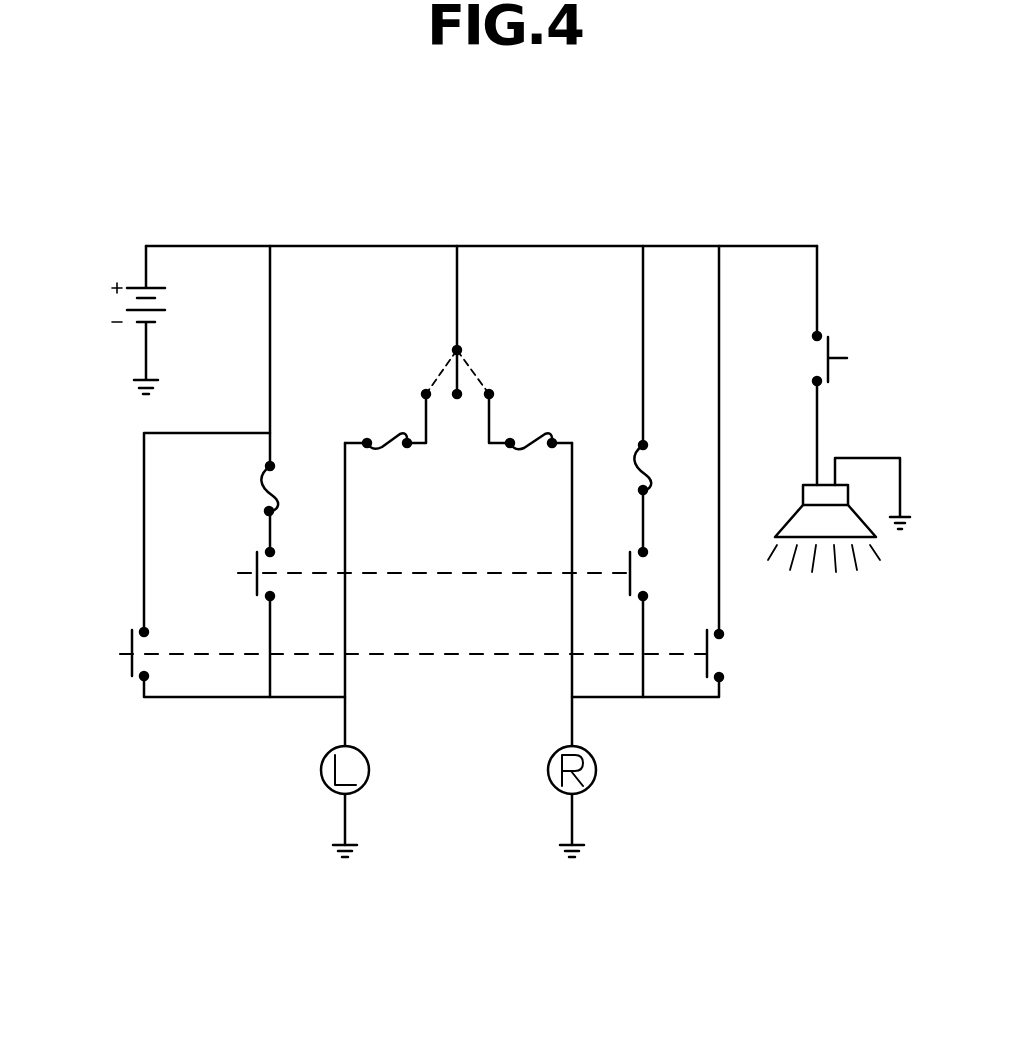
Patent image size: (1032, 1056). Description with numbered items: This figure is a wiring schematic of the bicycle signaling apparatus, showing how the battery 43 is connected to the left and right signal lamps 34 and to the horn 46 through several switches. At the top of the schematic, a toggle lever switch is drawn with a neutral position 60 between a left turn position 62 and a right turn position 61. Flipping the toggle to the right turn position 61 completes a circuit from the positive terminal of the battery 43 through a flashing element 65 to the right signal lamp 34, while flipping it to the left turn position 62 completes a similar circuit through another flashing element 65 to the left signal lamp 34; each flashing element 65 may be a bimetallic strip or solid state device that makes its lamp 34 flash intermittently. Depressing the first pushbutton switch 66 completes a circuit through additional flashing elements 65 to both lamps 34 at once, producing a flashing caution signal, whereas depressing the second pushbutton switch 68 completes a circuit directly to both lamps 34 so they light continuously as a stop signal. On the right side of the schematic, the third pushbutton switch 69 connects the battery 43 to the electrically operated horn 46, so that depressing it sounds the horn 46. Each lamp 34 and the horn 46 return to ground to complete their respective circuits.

The battery 43 is at (92, 302).
The third pushbutton switch 69 is at (843, 342).
The neutral position 60 is at (461, 392).
The left turn position 62 is at (424, 392).
The right turn position 61 is at (492, 393).
The flashing element 65 is at (258, 490).
The first pushbutton switch 66 is at (243, 566).
The second pushbutton switch 68 is at (118, 646).
The horn 46 is at (835, 532).
The lamp 34 is at (321, 776).